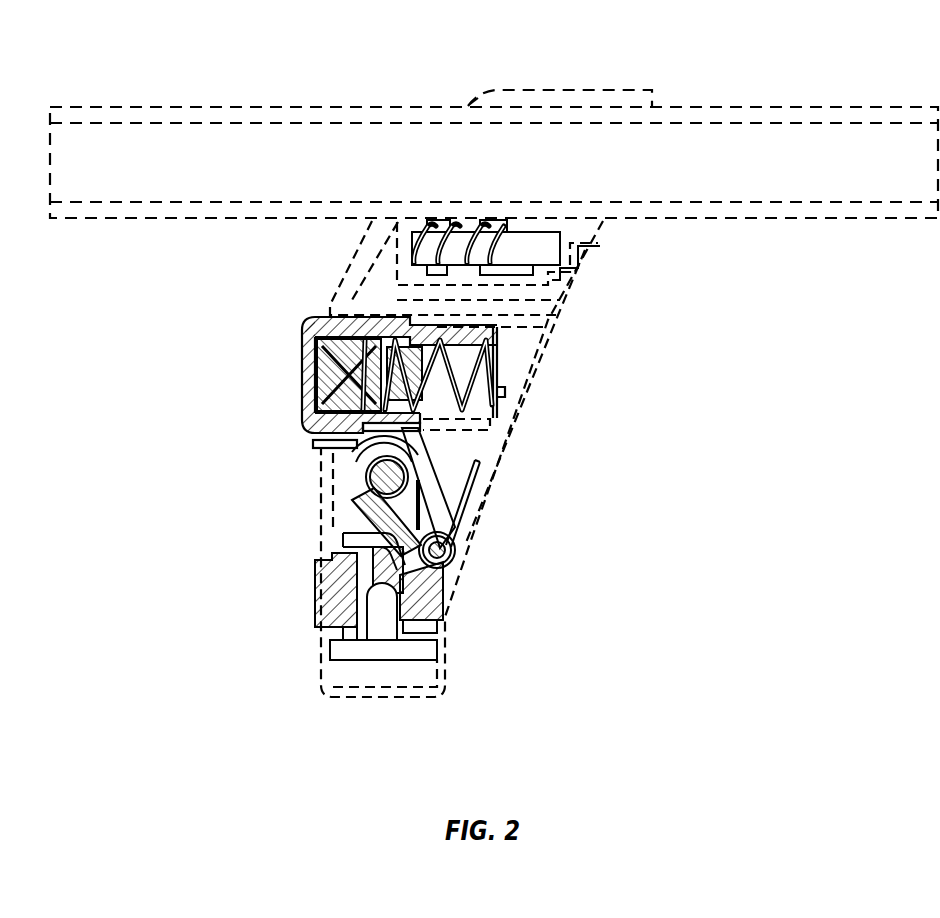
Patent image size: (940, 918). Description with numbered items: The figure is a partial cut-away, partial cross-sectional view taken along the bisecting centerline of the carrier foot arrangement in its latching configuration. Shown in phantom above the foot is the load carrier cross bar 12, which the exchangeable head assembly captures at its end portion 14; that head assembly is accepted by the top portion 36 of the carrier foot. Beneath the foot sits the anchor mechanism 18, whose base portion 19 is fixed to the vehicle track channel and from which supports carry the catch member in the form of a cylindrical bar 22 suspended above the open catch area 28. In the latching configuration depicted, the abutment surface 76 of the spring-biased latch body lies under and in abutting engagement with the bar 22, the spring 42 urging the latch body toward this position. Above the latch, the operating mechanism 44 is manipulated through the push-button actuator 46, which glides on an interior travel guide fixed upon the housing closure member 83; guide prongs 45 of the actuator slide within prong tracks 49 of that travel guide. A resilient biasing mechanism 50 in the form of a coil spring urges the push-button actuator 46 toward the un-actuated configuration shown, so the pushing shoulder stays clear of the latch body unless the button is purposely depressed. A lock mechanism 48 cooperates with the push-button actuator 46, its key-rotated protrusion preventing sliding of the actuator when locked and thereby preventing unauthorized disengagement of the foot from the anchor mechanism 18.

The load carrier cross bar 12 is at (746, 104).
The end portion 14 is at (463, 97).
The top portion 36 is at (560, 82).
The operating mechanism 44 is at (514, 438).
The guide prongs 45 is at (528, 316).
The prong tracks 49 is at (524, 338).
The push-button actuator 46 is at (292, 378).
The lock mechanism 48 is at (300, 362).
The resilient biasing mechanism 50 is at (472, 388).
The cylindrical bar 22 is at (384, 475).
The abutment surface 76 is at (378, 517).
The catch area 28 is at (348, 528).
The spring 42 is at (442, 522).
The housing closure member 83 is at (476, 545).
The anchor mechanism 18 is at (292, 584).
The base portion 19 is at (318, 605).